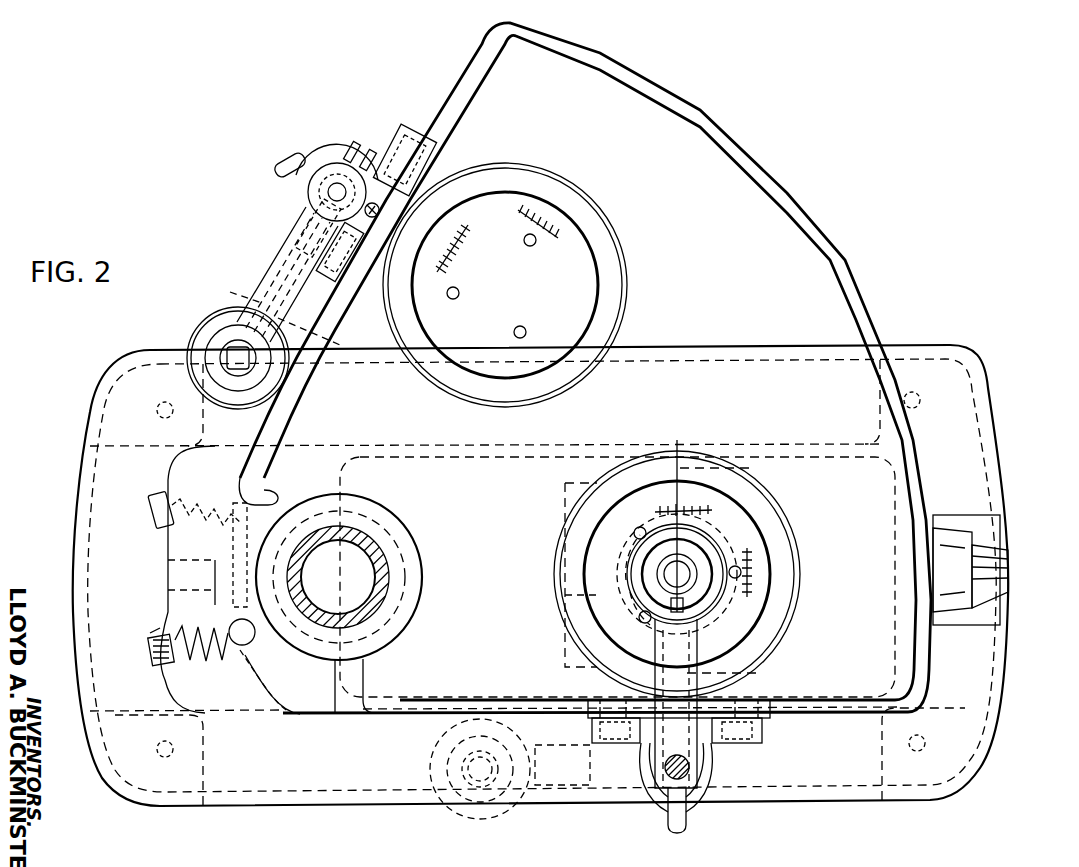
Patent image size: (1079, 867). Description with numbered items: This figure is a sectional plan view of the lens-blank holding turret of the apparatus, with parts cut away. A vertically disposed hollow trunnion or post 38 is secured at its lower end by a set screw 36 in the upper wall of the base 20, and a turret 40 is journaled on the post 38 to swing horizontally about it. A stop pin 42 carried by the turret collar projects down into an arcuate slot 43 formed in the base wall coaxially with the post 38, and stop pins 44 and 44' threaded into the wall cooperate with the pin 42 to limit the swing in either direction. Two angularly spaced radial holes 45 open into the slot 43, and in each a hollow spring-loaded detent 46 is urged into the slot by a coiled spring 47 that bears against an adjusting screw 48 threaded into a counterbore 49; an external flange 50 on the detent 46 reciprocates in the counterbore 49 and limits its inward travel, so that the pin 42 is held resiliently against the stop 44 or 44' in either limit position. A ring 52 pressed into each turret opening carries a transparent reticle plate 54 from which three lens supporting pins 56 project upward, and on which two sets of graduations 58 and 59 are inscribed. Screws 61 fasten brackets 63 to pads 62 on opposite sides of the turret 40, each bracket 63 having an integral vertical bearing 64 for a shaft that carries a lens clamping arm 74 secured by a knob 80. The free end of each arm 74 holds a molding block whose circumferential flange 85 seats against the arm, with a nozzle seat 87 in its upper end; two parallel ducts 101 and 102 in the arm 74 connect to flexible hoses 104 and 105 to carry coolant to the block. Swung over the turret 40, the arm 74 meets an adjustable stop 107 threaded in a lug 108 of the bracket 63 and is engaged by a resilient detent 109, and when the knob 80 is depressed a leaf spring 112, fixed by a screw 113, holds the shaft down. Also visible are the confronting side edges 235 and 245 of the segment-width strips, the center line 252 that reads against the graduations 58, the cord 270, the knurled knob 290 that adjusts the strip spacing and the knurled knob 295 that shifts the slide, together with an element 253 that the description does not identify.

The base 20 is at (1005, 668).
The set screw 36 is at (258, 518).
The hollow trunnion or post 38 is at (380, 600).
The turret 40 is at (823, 235).
The stop pin 42 is at (250, 640).
The arcuate slot 43 is at (230, 555).
The stop pin 44 is at (292, 727).
The stop pin 44' is at (213, 439).
The holes 45 is at (165, 548).
The hollow spring-loaded detent 46 is at (262, 500).
The coiled spring 47 is at (206, 500).
The adjusting screw 48 is at (152, 506).
The counterbore 49 is at (150, 632).
The external flange 50 is at (195, 706).
The ring 52 is at (618, 312).
The transparent reticle plate 54 is at (595, 268).
The lens supporting pins 56 is at (532, 246).
The graduations 58 is at (530, 202).
The graduations 59 is at (450, 257).
The screws 61 is at (332, 272).
The pads 62 is at (442, 138).
The brackets 63 is at (428, 132).
The bearing 64 is at (308, 160).
The lens clamping arm 74 is at (262, 262).
The knob 80 is at (310, 190).
The circumferential flange 85 is at (210, 330).
The nozzle seat 87 is at (240, 372).
The duct 101 is at (240, 292).
The duct 102 is at (322, 334).
The flexible hose 104 is at (355, 142).
The flexible hose 105 is at (368, 150).
The stop 107 is at (422, 170).
The lug 108 is at (378, 148).
The resilient detent 109 is at (300, 232).
The leaf spring 112 is at (300, 155).
The screw 113 is at (356, 300).
The side edge 235 is at (630, 592).
The side edge 245 is at (626, 575).
The center line 252 is at (562, 564).
The guide 253 is at (562, 493).
The cord 270 is at (737, 466).
The knurled knob 290 is at (950, 625).
The knurled knob 295 is at (1008, 588).